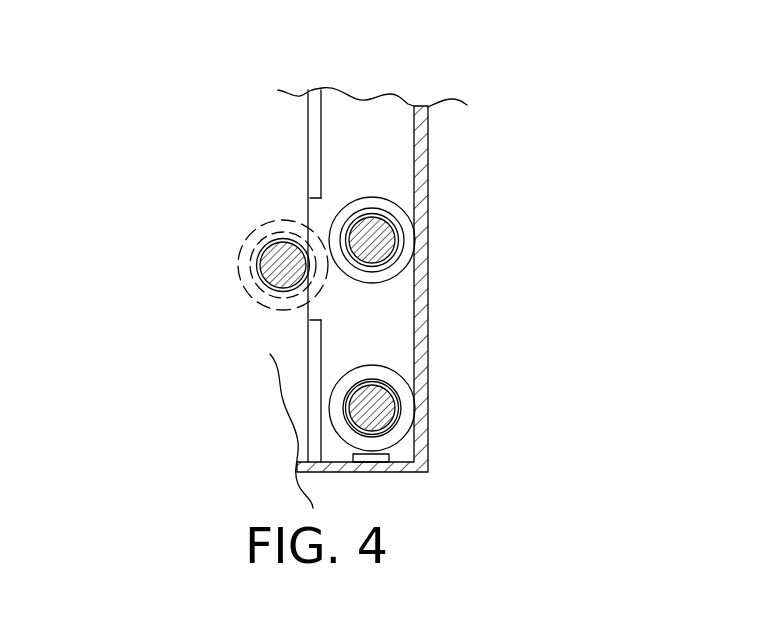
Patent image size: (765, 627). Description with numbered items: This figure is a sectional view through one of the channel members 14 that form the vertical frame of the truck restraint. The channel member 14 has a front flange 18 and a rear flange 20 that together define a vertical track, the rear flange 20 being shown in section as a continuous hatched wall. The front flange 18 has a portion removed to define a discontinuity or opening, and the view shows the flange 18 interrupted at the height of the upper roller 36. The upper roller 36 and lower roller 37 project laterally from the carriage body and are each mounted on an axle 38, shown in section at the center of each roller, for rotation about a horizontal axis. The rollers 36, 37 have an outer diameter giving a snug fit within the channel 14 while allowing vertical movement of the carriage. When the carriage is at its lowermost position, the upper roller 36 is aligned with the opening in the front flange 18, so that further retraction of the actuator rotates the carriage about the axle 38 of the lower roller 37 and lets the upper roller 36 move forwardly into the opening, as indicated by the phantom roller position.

The channel member 14 is at (393, 92).
The front flange 18 is at (315, 152).
The rear flange 20 is at (428, 158).
The upper roller 36 is at (405, 238).
The lower roller 37 is at (337, 413).
The axle 38 is at (374, 250).